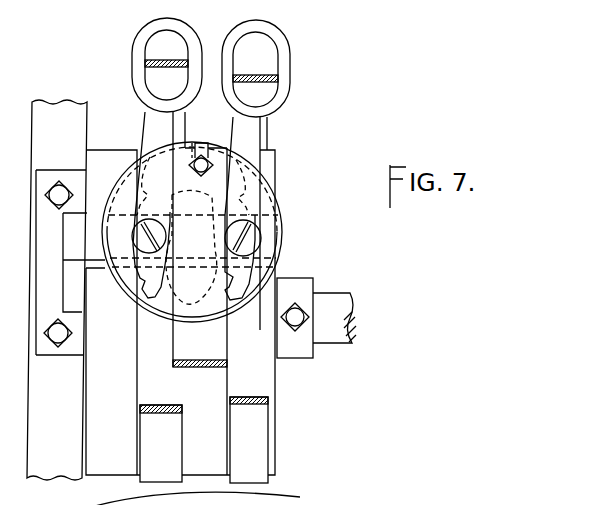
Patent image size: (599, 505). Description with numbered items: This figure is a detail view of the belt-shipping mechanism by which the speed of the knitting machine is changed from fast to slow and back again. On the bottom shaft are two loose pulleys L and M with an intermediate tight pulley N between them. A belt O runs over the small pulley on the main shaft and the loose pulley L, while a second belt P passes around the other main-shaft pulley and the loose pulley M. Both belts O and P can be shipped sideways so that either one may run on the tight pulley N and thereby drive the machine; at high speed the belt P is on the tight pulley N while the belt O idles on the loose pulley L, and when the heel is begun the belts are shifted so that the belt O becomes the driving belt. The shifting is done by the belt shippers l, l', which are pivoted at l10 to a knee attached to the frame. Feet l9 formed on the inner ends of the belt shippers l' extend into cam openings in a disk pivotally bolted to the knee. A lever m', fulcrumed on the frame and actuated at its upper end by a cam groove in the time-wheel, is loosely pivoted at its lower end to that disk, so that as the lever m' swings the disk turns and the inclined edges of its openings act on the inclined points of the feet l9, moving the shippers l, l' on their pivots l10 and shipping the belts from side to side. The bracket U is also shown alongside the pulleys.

The belt shipper l is at (167, 108).
The belt shippers l' is at (256, 165).
The feet l9 is at (303, 263).
The pivots l10 is at (307, 229).
The bracket block U is at (75, 262).
The loose pulley M is at (111, 371).
The tight pulley N is at (182, 424).
The belt P is at (161, 443).
The belt O is at (249, 440).
The loose pulley L is at (251, 312).
The lever m' is at (200, 309).